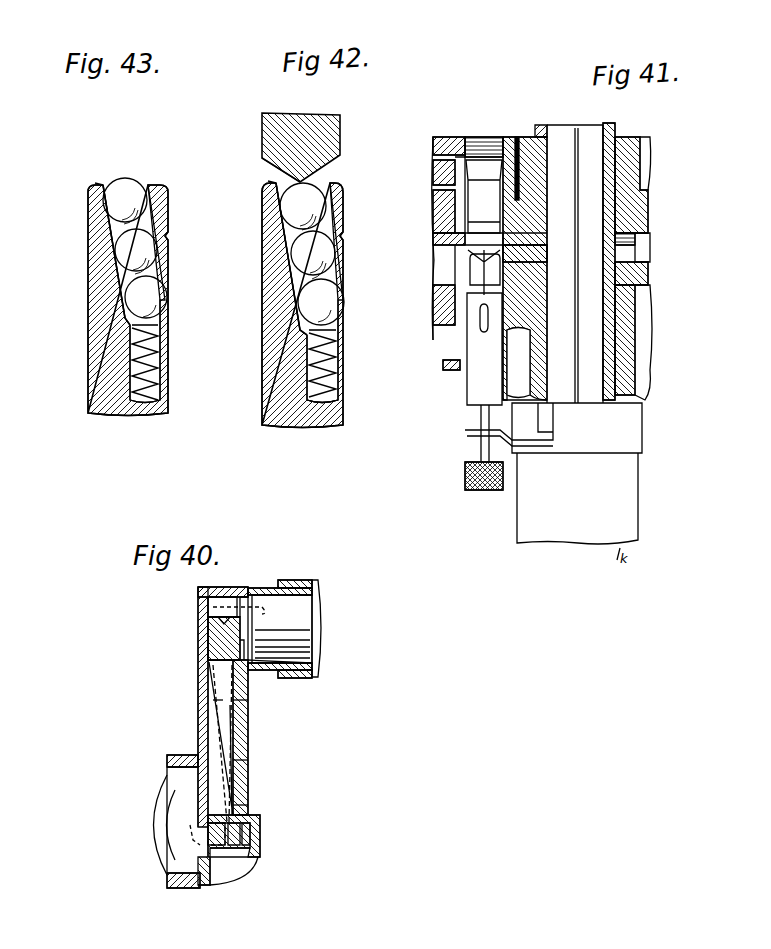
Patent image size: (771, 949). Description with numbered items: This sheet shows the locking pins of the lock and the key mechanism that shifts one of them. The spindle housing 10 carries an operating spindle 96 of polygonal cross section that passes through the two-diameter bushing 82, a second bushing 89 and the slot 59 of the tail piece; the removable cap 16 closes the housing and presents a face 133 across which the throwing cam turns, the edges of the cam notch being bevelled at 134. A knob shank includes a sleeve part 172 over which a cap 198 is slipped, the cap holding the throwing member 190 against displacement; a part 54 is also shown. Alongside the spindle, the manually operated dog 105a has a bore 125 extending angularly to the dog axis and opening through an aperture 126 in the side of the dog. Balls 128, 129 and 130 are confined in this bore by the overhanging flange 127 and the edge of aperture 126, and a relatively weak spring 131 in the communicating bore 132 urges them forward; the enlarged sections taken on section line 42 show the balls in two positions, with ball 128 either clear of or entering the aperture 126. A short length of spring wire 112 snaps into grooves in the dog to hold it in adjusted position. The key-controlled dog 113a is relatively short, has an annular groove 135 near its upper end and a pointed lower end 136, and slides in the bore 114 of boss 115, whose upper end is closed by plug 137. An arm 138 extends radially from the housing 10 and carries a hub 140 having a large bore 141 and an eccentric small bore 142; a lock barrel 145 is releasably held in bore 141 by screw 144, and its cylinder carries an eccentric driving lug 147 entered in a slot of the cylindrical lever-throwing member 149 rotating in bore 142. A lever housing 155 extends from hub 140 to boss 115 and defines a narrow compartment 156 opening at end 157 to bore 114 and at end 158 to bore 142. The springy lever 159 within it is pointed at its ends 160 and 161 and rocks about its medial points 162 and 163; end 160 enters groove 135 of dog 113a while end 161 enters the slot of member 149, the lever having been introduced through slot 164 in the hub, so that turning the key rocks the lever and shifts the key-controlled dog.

In FIG. 43, the manually operated dog 105a is at (90, 368).
In FIG. 42, the manually operated dog 105a is at (266, 404).
In FIG. 41, the manually operated dog 105a is at (470, 372).
In FIG. 43, the overhanging flange 127 is at (103, 186).
In FIG. 42, the overhanging flange 127 is at (276, 186).
In FIG. 43, the bore 125 is at (100, 282).
In FIG. 42, the bore 125 is at (292, 288).
In FIG. 43, the ball 130 is at (125, 201).
In FIG. 42, the ball 130 is at (303, 206).
In FIG. 43, the ball 129 is at (136, 251).
In FIG. 42, the ball 129 is at (313, 255).
In FIG. 43, the ball 128 is at (146, 297).
In FIG. 42, the ball 128 is at (321, 302).
In FIG. 43, the aperture 126 is at (160, 325).
In FIG. 42, the aperture 126 is at (340, 332).
In FIG. 43, the spring 131 is at (158, 365).
In FIG. 42, the spring 131 is at (340, 400).
In FIG. 42, the communicating bore 132 is at (330, 360).
In FIG. 42, the key-controlled dog 113a is at (330, 132).
In FIG. 41, the key-controlled dog 113a is at (470, 205).
In FIG. 40, the key-controlled dog 113a is at (232, 840).
In FIG. 42, the pointed lower end 136 is at (280, 180).
In FIG. 41, the operating spindle 96 is at (588, 132).
In FIG. 41, the plug 137 is at (516, 140).
In FIG. 41, the annular groove 135 is at (484, 228).
In FIG. 41, the slot 59 is at (490, 238).
In FIG. 41, the section line 42 is at (493, 243).
In FIG. 41, the bevelled edges 134 is at (522, 254).
In FIG. 41, the face of cap 133 is at (502, 268).
In FIG. 41, the spring wire 112 is at (440, 290).
In FIG. 41, the throwing member 190 is at (468, 440).
In FIG. 41, the cap 198 is at (636, 441).
In FIG. 41, the sleeve part 172 is at (630, 491).
In FIG. 41, the two-diameter bushing 82 is at (618, 170).
In FIG. 41, the ring 54 is at (650, 240).
In FIG. 41, the removable cap 16 is at (650, 274).
In FIG. 41, the bushing 89 is at (630, 320).
In FIG. 40, the arm 138 is at (202, 716).
In FIG. 40, the slot 164 is at (224, 590).
In FIG. 40, the lever-throwing member 149 is at (212, 631).
In FIG. 40, the small bore 142 is at (210, 620).
In FIG. 40, the lever end 161 is at (210, 665).
In FIG. 40, the hub 140 is at (256, 586).
In FIG. 40, the lock barrel 145 is at (305, 624).
In FIG. 40, the large bore 141 is at (302, 582).
In FIG. 40, the screw 144 is at (268, 614).
In FIG. 40, the driving lug 147 is at (256, 670).
In FIG. 40, the compartment end opening 158 is at (212, 673).
In FIG. 40, the compartment 156 is at (236, 698).
In FIG. 40, the medial point 163 is at (242, 748).
In FIG. 40, the lever 159 is at (222, 733).
In FIG. 40, the lever housing 155 is at (240, 778).
In FIG. 40, the lever end 160 is at (248, 812).
In FIG. 40, the spindle housing 10 is at (155, 756).
In FIG. 40, the medial point 162 is at (200, 770).
In FIG. 40, the boss 115 is at (260, 835).
In FIG. 40, the compartment end opening 157 is at (215, 818).
In FIG. 40, the bore 114 is at (248, 862).